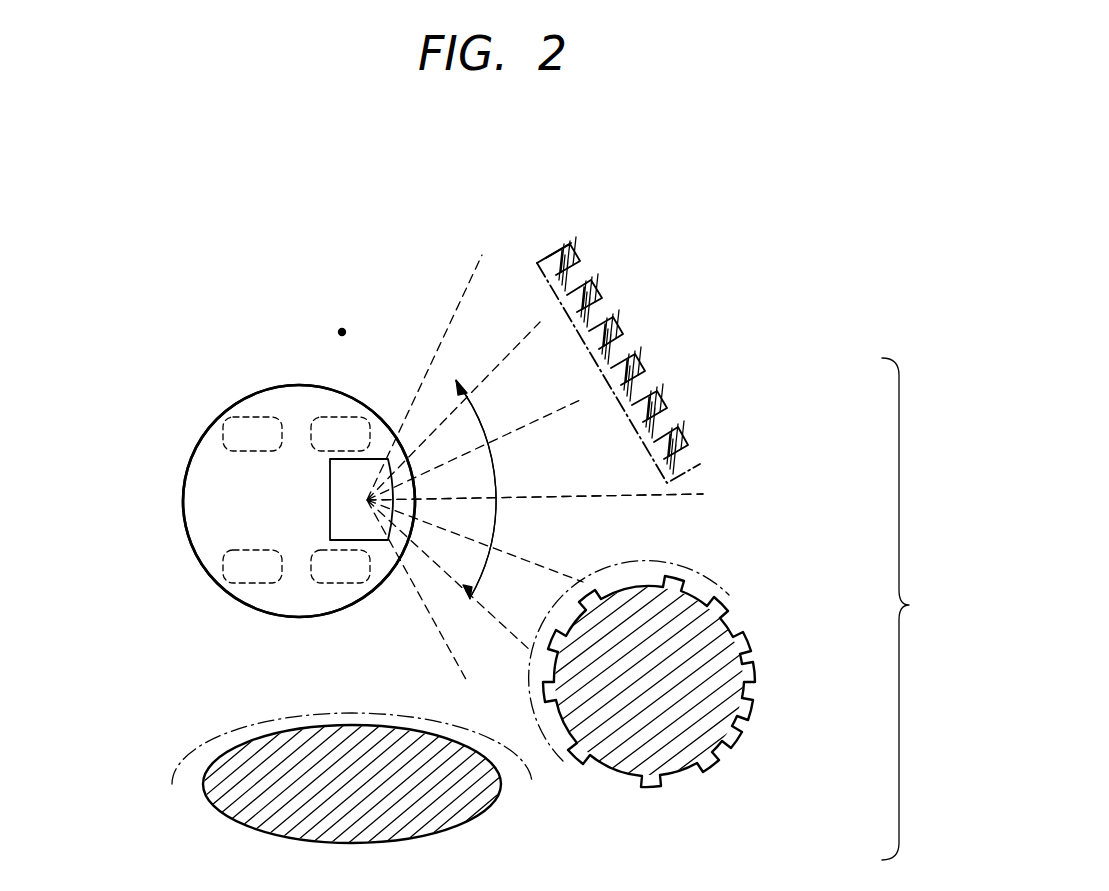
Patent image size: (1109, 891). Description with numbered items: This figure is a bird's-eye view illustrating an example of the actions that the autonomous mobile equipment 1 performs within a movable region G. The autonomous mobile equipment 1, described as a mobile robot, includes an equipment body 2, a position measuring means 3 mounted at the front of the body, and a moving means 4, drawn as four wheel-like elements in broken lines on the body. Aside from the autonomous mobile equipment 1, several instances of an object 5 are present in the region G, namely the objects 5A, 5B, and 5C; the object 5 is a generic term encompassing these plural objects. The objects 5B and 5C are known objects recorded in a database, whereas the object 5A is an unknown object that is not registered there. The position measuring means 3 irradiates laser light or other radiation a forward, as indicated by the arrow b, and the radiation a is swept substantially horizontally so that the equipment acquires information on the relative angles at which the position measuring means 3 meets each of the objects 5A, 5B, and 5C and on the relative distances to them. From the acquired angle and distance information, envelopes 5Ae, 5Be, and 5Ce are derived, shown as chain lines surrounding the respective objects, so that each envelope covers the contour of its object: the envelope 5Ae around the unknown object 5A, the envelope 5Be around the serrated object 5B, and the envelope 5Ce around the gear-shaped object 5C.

The autonomous mobile equipment 1 is at (175, 481).
The equipment body 2 is at (200, 443).
The position measuring means 3 is at (330, 523).
The moving means 4 is at (248, 416).
The movable region G is at (342, 332).
The radiation a is at (678, 496).
The arrow b is at (497, 518).
The object 5 is at (909, 609).
The object 5A is at (491, 740).
The envelope 5Ae is at (203, 750).
The object 5B is at (675, 335).
The envelope 5Be is at (557, 254).
The object 5C is at (620, 681).
The envelope 5Ce is at (533, 672).